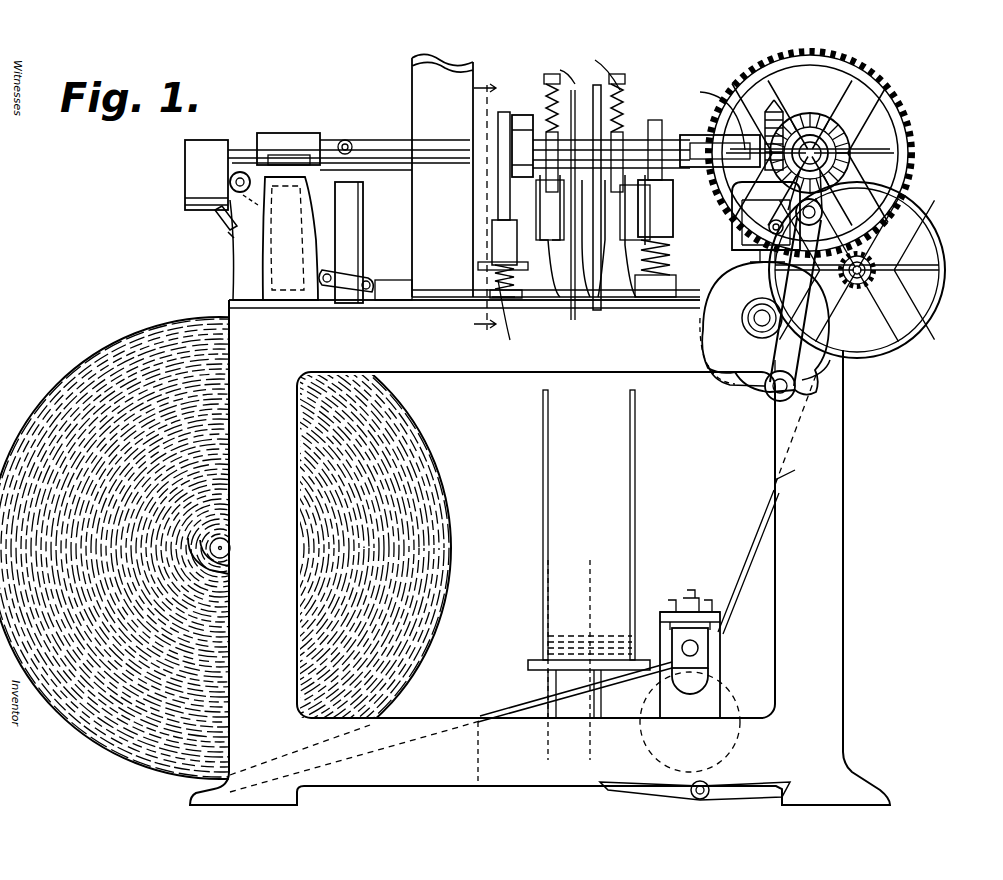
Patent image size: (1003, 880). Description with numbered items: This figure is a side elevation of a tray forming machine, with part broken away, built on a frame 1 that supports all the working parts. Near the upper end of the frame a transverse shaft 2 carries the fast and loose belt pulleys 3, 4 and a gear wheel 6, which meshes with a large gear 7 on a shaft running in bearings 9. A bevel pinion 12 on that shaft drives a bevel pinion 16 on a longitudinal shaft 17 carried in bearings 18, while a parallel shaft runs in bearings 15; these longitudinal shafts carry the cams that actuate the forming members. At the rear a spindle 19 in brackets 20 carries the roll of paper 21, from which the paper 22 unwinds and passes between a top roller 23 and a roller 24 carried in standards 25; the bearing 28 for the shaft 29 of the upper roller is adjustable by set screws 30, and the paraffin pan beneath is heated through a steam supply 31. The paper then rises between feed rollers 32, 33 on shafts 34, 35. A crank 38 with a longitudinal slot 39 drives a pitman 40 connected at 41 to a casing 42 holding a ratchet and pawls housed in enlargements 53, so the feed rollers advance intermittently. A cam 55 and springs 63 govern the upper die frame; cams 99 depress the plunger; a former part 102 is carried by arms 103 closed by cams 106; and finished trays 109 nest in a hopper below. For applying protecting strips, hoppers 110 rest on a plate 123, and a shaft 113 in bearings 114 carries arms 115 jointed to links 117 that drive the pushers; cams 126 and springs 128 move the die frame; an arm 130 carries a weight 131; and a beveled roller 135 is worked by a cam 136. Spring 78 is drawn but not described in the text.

The frame 1 is at (780, 596).
The transverse shaft 2 is at (868, 266).
The fast belt pulley 3 is at (945, 250).
The loose belt pulley 4 is at (590, 435).
The gear wheel 6 is at (485, 210).
The large gear 7 is at (912, 170).
The bearings 9 is at (830, 150).
The bevel pinion 12 is at (820, 125).
The bearings 15 is at (646, 151).
The bevel pinion 16 is at (776, 112).
The longitudinal shaft 17 is at (386, 165).
The bearings 18 is at (288, 149).
The shaft or spindle 19 is at (231, 548).
The brackets or supports 20 is at (229, 577).
The roll of paper 21 is at (448, 518).
The paper 22 is at (800, 434).
The top roller 23 is at (665, 615).
The roller 24 is at (725, 706).
The standards or supports 25 is at (710, 672).
The bearing 28 is at (708, 640).
The shaft 29 is at (680, 648).
The set screws 30 is at (690, 596).
The steam supply 31 is at (710, 785).
The feed roller 32 is at (760, 198).
The feed roller 33 is at (700, 324).
The shaft 34 is at (768, 228).
The shaft 35 is at (760, 310).
The crank 38 is at (830, 172).
The longitudinal slot 39 is at (822, 210).
The pitman 40 is at (790, 326).
The connection 41 is at (772, 398).
The casing 42 is at (764, 328).
The enlargements 53 is at (732, 385).
The cam 55 is at (718, 110).
The springs 63 is at (630, 270).
The fork 78 is at (575, 262).
The cams 99 is at (620, 108).
The former part 102 is at (526, 138).
The arms 103 is at (589, 525).
The cams 106 is at (640, 140).
The completed trays 109 is at (590, 640).
The hoppers 110 is at (442, 175).
The shaft 113 is at (240, 172).
The bearings 114 is at (255, 150).
The arms 115 is at (300, 270).
The link 117 is at (370, 285).
The plate 123 is at (430, 306).
The cams 126 is at (502, 112).
The springs 128 is at (515, 322).
The arm 130 is at (345, 140).
The weight 131 is at (355, 219).
The beveled roller 135 is at (222, 226).
The cam 136 is at (186, 176).